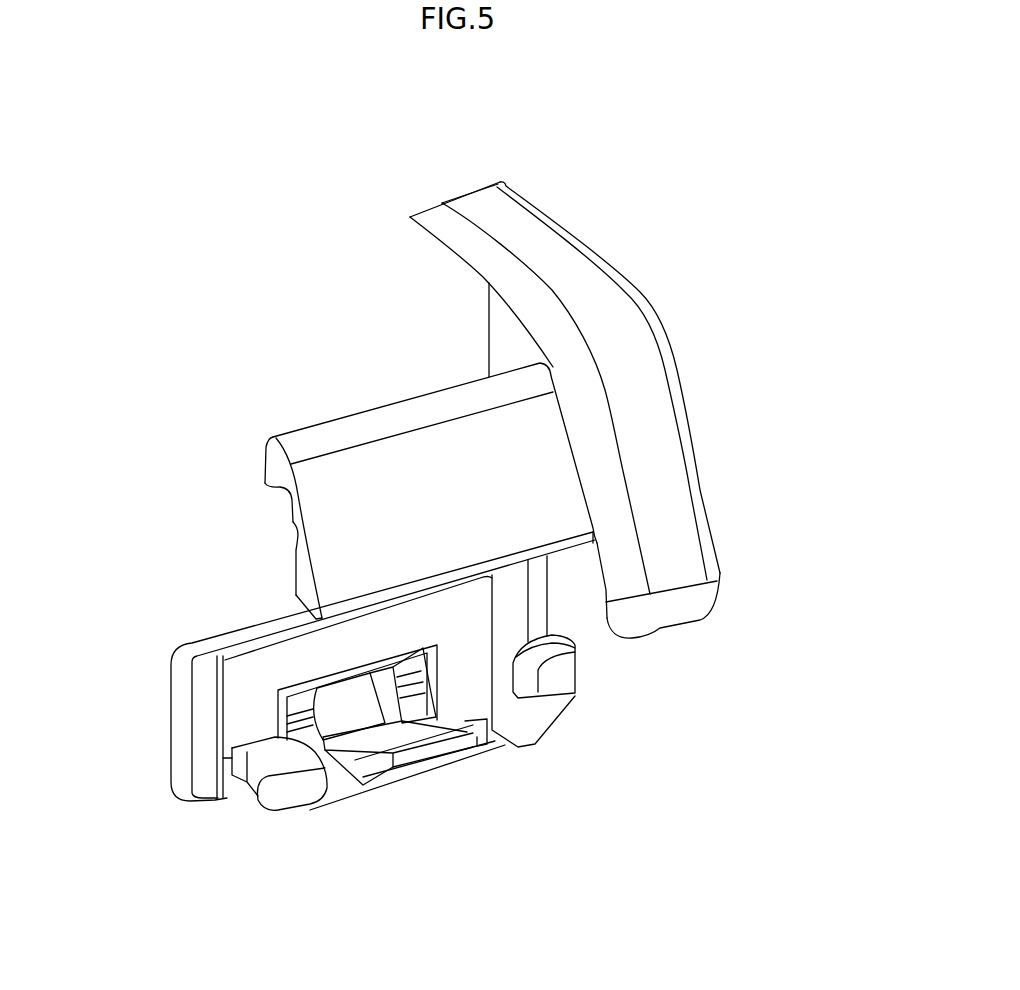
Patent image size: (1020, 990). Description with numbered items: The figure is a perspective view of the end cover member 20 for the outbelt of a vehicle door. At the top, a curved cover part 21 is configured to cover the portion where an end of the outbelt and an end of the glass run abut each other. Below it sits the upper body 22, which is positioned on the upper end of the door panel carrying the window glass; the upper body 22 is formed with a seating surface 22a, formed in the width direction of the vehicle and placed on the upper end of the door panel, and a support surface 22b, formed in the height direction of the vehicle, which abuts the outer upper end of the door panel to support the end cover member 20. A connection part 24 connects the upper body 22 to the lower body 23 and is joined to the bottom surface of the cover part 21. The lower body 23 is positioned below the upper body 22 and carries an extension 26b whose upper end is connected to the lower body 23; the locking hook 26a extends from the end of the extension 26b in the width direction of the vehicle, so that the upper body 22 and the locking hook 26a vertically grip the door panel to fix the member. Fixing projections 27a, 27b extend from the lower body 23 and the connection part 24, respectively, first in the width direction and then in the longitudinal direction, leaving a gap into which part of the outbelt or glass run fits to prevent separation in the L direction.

The end cover member 20 is at (773, 137).
The cover part 21 is at (651, 432).
The upper body 22 is at (335, 483).
The seating surface 22a is at (267, 488).
The support surface 22b is at (292, 520).
The lower body 23 is at (394, 721).
The connection part 24 is at (508, 333).
The locking hook 26a is at (410, 737).
The extension 26b is at (303, 713).
The fixing projection 27a is at (257, 770).
The fixing projection 27b is at (558, 677).